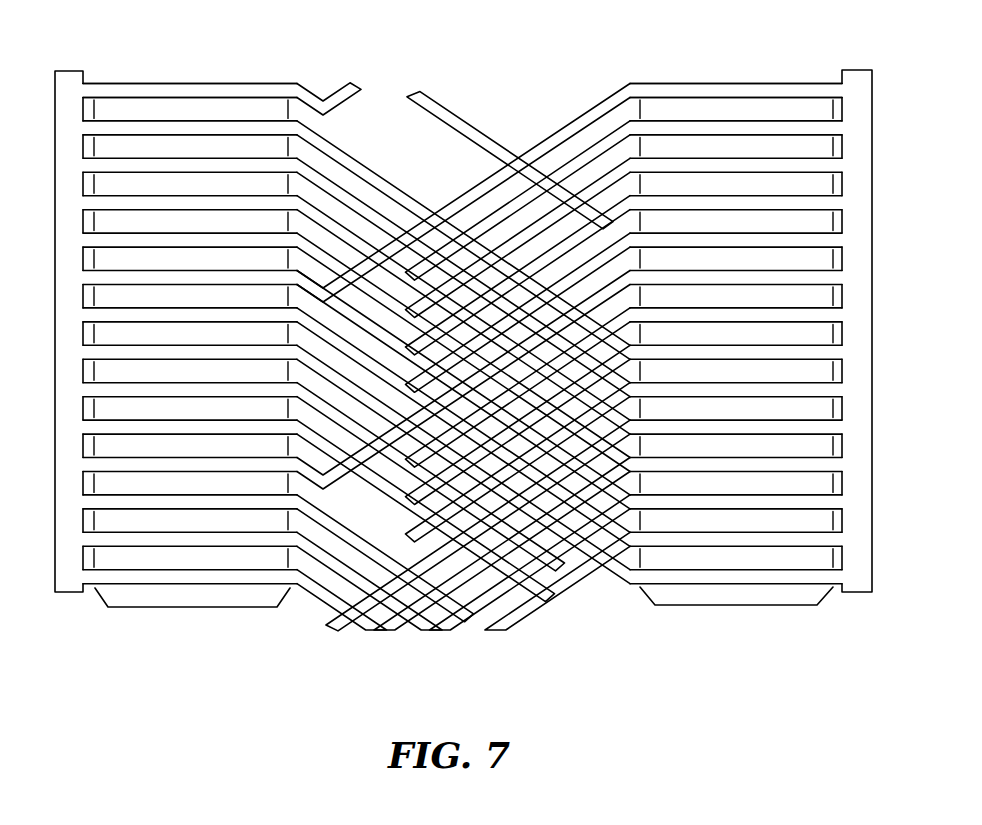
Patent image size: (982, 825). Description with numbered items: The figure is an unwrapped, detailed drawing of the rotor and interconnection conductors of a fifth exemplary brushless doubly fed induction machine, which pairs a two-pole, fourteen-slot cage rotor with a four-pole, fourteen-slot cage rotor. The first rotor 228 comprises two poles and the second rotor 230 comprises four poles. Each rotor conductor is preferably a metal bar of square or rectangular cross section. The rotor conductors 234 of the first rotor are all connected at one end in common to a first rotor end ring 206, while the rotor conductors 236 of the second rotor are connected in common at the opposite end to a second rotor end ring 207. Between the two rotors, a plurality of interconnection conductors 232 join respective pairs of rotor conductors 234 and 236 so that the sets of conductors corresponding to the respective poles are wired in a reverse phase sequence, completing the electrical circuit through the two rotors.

The first rotor end ring 206 is at (72, 80).
The second rotor end ring 207 is at (858, 588).
The first rotor 228 is at (187, 607).
The second rotor 230 is at (737, 605).
The interconnection conductors 232 is at (437, 102).
The rotor conductors 234 is at (205, 92).
The rotor conductors 236 is at (637, 92).